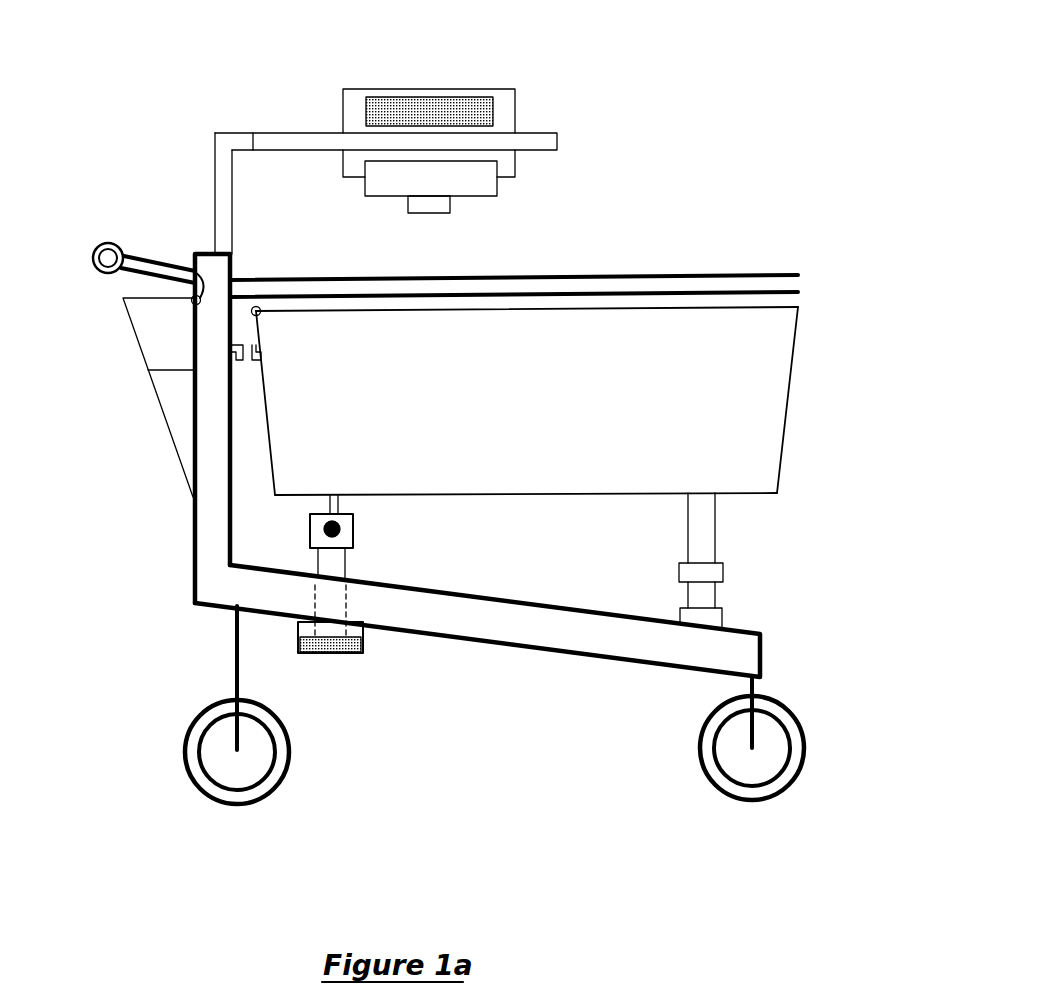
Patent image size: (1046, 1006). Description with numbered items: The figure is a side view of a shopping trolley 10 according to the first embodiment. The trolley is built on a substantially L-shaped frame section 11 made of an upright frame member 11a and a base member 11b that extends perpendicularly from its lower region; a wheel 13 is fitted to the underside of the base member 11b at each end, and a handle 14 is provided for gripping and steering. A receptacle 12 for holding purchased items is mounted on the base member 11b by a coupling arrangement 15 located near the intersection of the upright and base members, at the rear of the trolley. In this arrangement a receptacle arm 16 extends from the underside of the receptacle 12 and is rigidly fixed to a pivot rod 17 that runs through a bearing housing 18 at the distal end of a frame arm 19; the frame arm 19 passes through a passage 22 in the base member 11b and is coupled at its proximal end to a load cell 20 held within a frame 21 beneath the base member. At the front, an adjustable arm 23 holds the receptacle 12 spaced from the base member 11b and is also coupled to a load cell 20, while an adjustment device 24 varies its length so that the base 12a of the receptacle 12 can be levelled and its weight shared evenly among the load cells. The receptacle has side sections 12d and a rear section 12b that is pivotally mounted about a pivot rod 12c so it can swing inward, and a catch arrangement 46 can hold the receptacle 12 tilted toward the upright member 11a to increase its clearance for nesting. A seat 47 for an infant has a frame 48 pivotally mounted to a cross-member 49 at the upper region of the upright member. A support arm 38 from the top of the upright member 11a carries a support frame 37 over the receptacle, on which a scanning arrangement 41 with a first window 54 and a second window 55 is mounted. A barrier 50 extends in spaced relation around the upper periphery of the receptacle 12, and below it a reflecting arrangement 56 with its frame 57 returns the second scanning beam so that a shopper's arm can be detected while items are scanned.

The trolley 10 is at (633, 51).
The L-shaped frame section 11 is at (184, 606).
The upright frame member 11a is at (215, 533).
The base member 11b is at (590, 640).
The receptacle 12 is at (770, 442).
The base of the receptacle 12a is at (512, 497).
The rear section of the receptacle 12b is at (265, 421).
The pivot rod 12c is at (283, 278).
The side section of the receptacle 12d is at (773, 348).
The wheel 13 is at (287, 769).
The handle 14 is at (105, 255).
The coupling arrangement 15 is at (411, 541).
The receptacle arm 16 is at (328, 500).
The pivot rod 17 is at (336, 525).
The bearing housing 18 is at (356, 538).
The frame arm 19 is at (340, 572).
The load cell 20 is at (340, 653).
The frame 21 is at (365, 650).
The passage 22 is at (330, 598).
The adjustable arm 23 is at (710, 525).
The adjustment device 24 is at (688, 572).
The support frame 37 is at (545, 143).
The support arm 38 is at (222, 208).
The scanning arrangement 41 is at (505, 98).
The catch arrangement 46 is at (243, 368).
The seat 47 is at (155, 370).
The seat frame 48 is at (125, 308).
The cross-member 49 is at (196, 266).
The barrier 50 is at (775, 277).
The first window 54 is at (428, 205).
The second window 55 is at (483, 183).
The reflecting arrangement 56 is at (801, 291).
The frame 57 is at (627, 290).